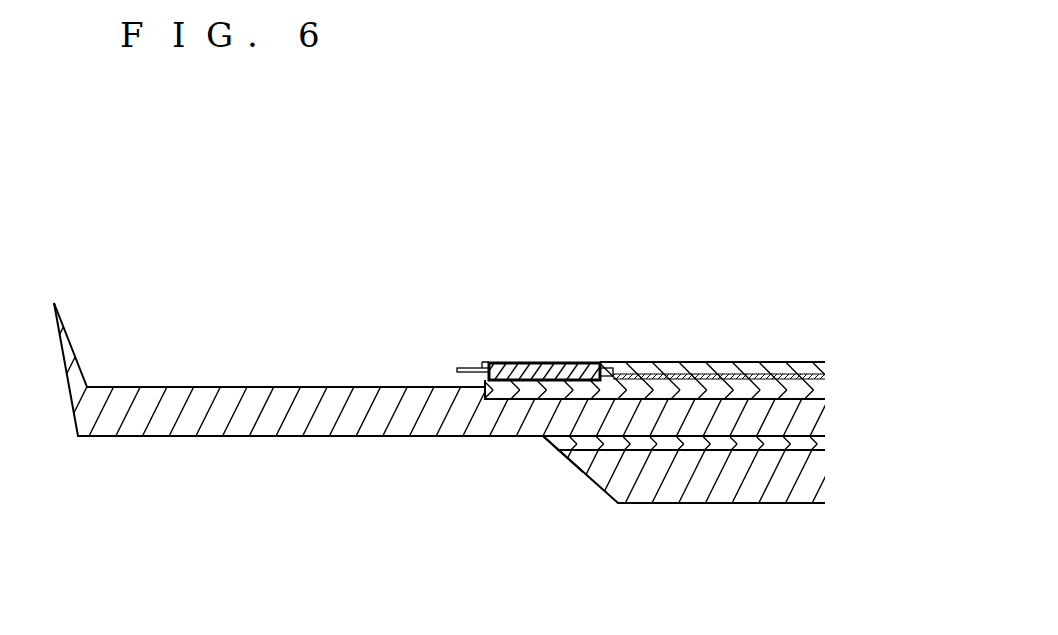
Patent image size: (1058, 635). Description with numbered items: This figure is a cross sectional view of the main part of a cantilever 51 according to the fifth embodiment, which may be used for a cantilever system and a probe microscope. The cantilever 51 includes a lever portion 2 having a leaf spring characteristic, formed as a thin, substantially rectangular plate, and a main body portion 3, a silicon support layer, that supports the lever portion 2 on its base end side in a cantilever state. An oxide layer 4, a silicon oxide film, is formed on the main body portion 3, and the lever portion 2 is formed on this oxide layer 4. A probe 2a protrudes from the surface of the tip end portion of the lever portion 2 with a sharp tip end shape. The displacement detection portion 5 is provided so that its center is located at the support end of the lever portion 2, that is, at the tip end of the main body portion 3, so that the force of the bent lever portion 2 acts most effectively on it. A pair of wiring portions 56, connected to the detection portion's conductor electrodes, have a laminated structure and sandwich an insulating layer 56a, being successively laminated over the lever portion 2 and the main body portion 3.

The cantilever 51 is at (374, 286).
The lever portion 2 is at (233, 387).
The probe 2a is at (67, 326).
The displacement detection portion 5 is at (533, 362).
The wiring portions 56 is at (636, 362).
The insulating layer 56a is at (690, 362).
The oxide layer 4 is at (583, 475).
The main body portion 3 is at (727, 503).